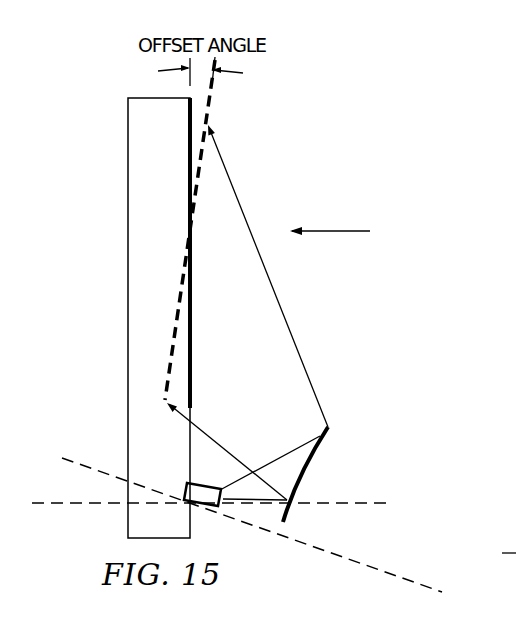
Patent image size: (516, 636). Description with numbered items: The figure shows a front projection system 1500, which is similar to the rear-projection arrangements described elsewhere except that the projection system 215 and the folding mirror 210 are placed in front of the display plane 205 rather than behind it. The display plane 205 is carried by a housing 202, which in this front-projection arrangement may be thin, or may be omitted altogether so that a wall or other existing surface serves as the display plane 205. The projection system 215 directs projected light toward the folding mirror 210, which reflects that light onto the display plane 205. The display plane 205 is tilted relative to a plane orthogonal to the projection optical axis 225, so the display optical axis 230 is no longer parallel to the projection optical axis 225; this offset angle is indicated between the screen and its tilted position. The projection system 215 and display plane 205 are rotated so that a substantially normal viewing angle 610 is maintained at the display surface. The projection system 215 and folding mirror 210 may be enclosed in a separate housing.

The front projection system 1500 is at (88, 85).
The housing 202 is at (128, 275).
The display plane 205 is at (192, 325).
The folding mirror 210 is at (308, 457).
The projection system 215 is at (207, 483).
The projection optical axis 225 is at (88, 463).
The display optical axis 230 is at (75, 506).
The viewing angle 610 is at (334, 231).